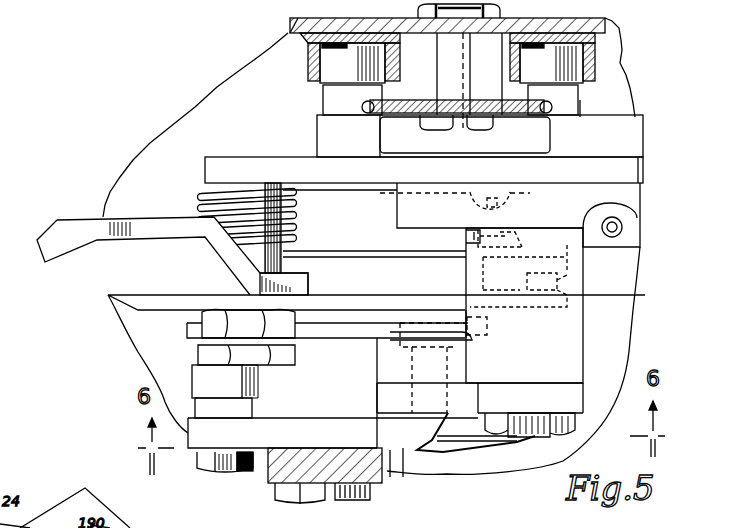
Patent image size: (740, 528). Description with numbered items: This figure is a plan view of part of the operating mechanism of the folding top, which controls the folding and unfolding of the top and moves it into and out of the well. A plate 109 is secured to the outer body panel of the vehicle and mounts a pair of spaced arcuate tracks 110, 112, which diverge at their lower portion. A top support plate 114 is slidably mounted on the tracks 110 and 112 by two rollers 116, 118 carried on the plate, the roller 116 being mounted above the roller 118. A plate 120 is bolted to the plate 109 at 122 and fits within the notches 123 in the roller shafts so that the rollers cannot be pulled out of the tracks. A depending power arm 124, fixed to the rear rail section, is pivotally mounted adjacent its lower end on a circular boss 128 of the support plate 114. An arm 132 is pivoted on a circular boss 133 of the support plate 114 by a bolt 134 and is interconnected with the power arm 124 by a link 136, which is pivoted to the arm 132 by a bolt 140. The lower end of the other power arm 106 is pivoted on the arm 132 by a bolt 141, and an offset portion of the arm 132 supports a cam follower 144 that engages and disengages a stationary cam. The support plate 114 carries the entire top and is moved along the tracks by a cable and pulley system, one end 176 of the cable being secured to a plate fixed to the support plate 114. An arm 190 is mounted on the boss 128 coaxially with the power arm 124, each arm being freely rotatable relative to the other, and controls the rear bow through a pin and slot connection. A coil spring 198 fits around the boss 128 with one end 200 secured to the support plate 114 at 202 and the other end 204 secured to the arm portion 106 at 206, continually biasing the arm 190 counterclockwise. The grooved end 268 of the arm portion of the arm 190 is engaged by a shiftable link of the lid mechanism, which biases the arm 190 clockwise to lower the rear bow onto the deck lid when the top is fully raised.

The power arm 106 is at (304, 455).
The plate 109 is at (603, 18).
The arcuate track 110 is at (592, 54).
The arcuate track 112 is at (304, 68).
The top support plate 114 is at (625, 168).
The roller 116 is at (385, 82).
The roller 118 is at (573, 77).
The plate 120 is at (507, 110).
The bolt connection 122 is at (453, 128).
The notch 123 is at (369, 106).
The depending power arm 124 is at (95, 228).
The circular boss 128 is at (263, 192).
The arm 132 is at (400, 470).
The circular boss 133 is at (583, 336).
The bolt 134 is at (533, 442).
The link 136 is at (187, 329).
The bolt 140 is at (490, 333).
The bolt 141 is at (364, 458).
The cam follower 144 is at (255, 378).
The cable end 176 is at (620, 229).
The arm 190 is at (142, 308).
The coil spring 198 is at (198, 196).
The spring end 200 is at (503, 186).
The spring anchor point 202 is at (513, 201).
The spring end 204 is at (525, 248).
The spring anchor point 206 is at (468, 232).
The grooved end 268 is at (583, 274).